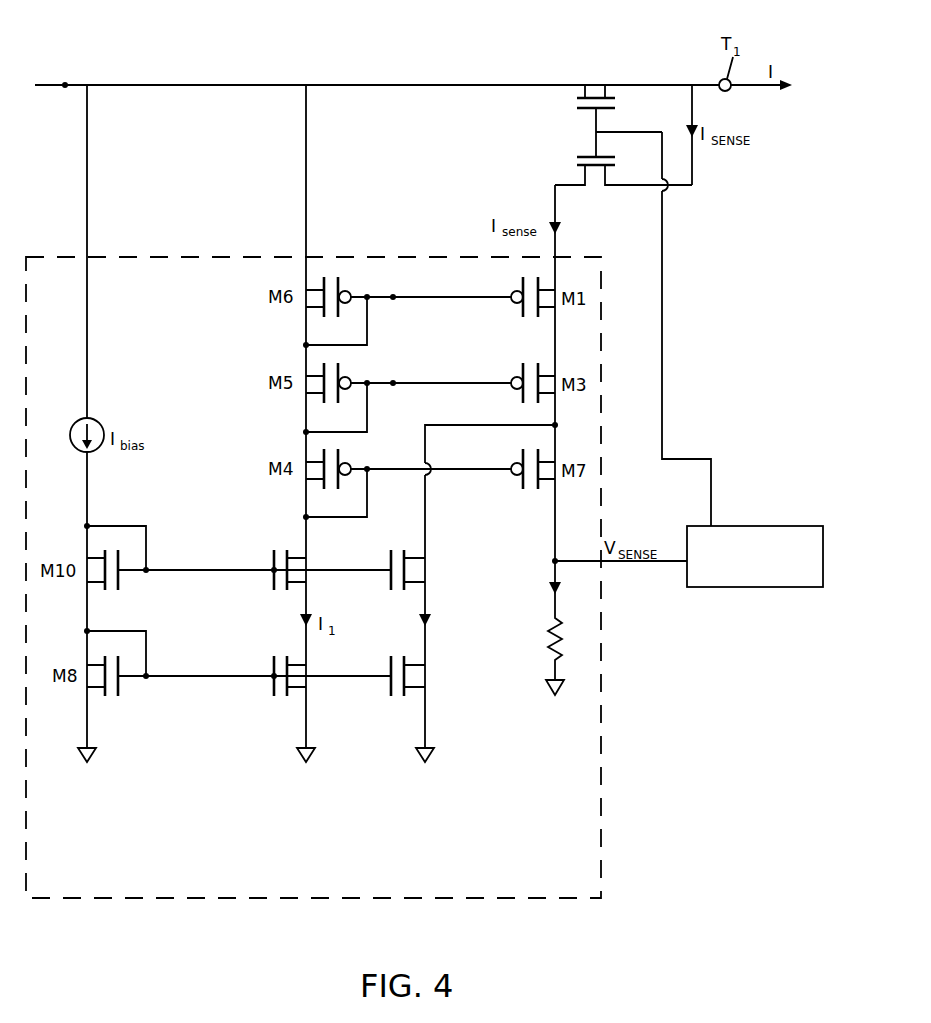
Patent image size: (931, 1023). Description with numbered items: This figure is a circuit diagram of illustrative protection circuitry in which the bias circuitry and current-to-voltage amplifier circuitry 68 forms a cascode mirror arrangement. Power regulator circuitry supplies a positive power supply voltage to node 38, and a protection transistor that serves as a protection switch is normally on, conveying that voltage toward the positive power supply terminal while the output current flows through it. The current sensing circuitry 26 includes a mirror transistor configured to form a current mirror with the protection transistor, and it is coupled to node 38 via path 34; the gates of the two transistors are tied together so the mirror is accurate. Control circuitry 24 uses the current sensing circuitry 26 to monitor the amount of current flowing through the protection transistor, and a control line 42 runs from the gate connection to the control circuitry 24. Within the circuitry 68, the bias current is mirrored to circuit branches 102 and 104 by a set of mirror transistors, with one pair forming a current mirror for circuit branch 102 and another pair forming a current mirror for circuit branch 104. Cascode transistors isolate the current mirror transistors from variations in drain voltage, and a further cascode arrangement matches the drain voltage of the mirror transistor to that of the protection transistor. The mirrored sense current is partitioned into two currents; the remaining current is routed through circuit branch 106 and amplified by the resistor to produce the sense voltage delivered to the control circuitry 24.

The node 38 is at (65, 83).
The path 34 is at (87, 180).
The bias circuitry and current-to-voltage amplifier circuitry 68 is at (215, 256).
The current sensing circuitry 26 is at (676, 252).
The control signal line 42 is at (661, 355).
The control circuitry 24 is at (713, 588).
The circuit branch 102 is at (334, 786).
The circuit branch 104 is at (452, 786).
The circuit branch 106 is at (581, 709).